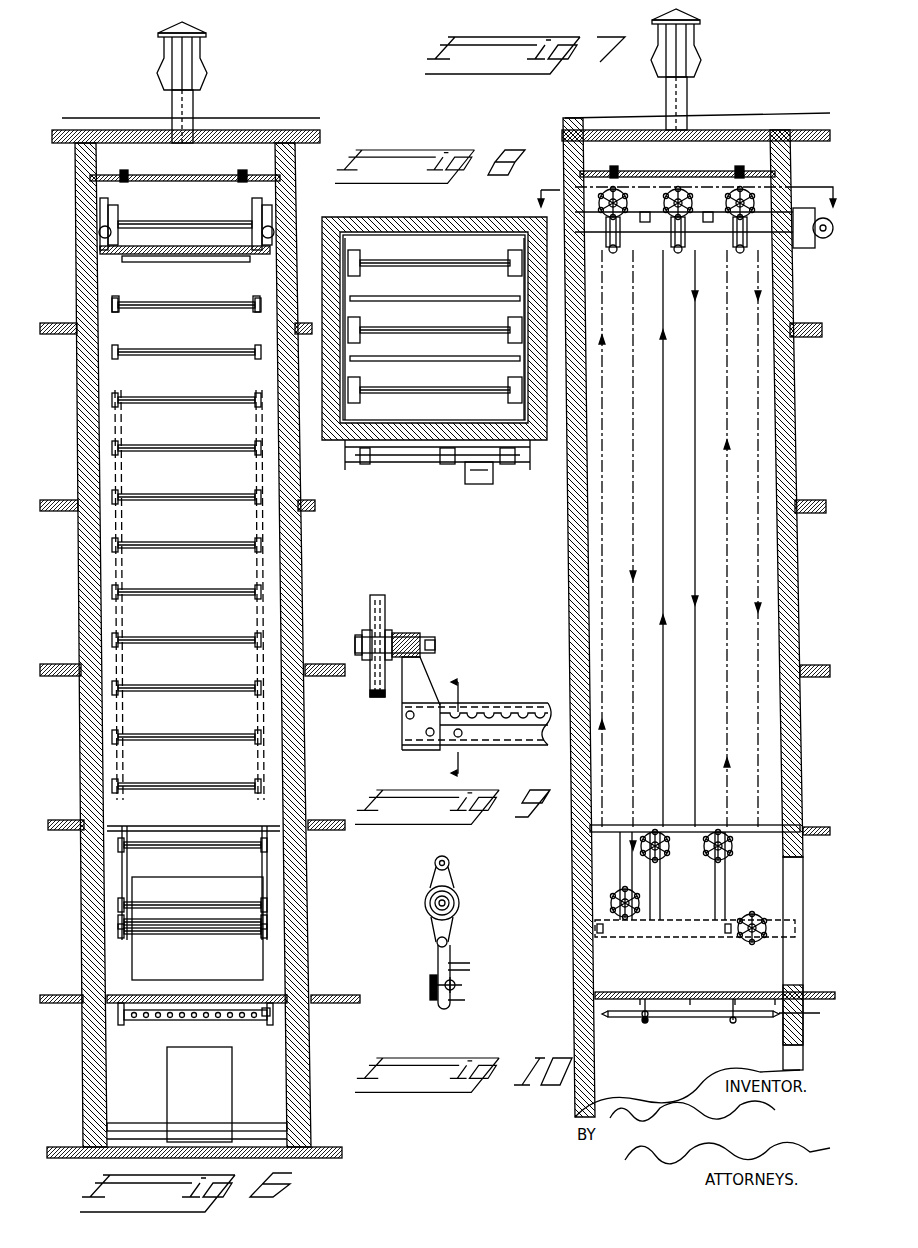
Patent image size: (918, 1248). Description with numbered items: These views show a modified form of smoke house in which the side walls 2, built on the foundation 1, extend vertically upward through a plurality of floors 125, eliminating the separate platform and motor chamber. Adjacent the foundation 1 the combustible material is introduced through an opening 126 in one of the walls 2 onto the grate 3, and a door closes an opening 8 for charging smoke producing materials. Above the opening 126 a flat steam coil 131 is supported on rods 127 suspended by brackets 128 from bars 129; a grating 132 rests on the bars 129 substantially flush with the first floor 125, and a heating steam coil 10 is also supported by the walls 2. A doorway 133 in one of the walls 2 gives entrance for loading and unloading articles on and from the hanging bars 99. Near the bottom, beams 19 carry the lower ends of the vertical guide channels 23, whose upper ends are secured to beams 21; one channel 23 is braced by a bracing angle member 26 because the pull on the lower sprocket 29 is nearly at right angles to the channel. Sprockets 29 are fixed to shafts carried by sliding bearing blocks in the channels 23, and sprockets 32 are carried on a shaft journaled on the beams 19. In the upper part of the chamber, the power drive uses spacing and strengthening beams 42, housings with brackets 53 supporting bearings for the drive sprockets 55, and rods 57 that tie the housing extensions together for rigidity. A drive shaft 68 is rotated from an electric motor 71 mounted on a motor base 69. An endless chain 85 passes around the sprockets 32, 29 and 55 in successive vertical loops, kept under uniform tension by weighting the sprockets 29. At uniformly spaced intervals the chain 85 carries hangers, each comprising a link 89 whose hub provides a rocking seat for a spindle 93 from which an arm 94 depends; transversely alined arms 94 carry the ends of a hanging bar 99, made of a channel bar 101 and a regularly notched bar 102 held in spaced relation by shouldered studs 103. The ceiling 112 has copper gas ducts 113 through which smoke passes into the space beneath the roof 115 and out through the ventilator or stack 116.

In FIG. 6, the foundation 1 is at (335, 1147).
In FIG. 6, the side walls 2 is at (85, 407).
In FIG. 7, the side walls 2 is at (575, 868).
In FIG. 8, the side walls 2 is at (435, 218).
In FIG. 6, the grates 3 is at (258, 1123).
In FIG. 7, the opening 8 is at (683, 217).
In FIG. 9, the heating steam coil 10 is at (467, 727).
In FIG. 7, the beams 19 is at (630, 928).
In FIG. 7, the beams 21 is at (745, 826).
In FIG. 7, the guide channels 23 is at (625, 873).
In FIG. 7, the bracing angle member 26 is at (633, 827).
In FIG. 7, the sprocket 29 is at (722, 846).
In FIG. 7, the sprocket 32 is at (752, 918).
In FIG. 6, the spacing and strengthening beams 42 is at (146, 222).
In FIG. 8, the spacing and strengthening beams 42 is at (452, 296).
In FIG. 6, the bracket 53 is at (252, 232).
In FIG. 6, the sprocket 55 is at (141, 235).
In FIG. 8, the sprocket 55 is at (362, 380).
In FIG. 6, the rod 57 is at (168, 254).
In FIG. 8, the rod 57 is at (398, 266).
In FIG. 8, the drive shaft 68 is at (410, 462).
In FIG. 8, the motor base 69 is at (490, 472).
In FIG. 8, the electric motor 71 is at (465, 473).
In FIG. 6, the endless chain 85 is at (258, 556).
In FIG. 7, the endless chain 85 is at (762, 478).
In FIG. 6, the link 89 is at (200, 306).
In FIG. 9, the link 89 is at (384, 607).
In FIG. 10, the link 89 is at (447, 878).
In FIG. 9, the spindle 93 is at (412, 642).
In FIG. 9, the arm 94 is at (413, 688).
In FIG. 10, the arm 94 is at (444, 940).
In FIG. 6, the hanging bar 99 is at (205, 262).
In FIG. 9, the hanging bar 99 is at (526, 713).
In FIG. 10, the hanging bar 99 is at (463, 975).
In FIG. 9, the channel bar 101 is at (495, 710).
In FIG. 10, the channel bar 101 is at (467, 963).
In FIG. 9, the notched bar 102 is at (540, 738).
In FIG. 10, the notched bar 102 is at (440, 1000).
In FIG. 9, the shouldered studs 103 is at (456, 737).
In FIG. 10, the shouldered studs 103 is at (458, 988).
In FIG. 6, the ceiling 112 is at (215, 168).
In FIG. 7, the ceiling 112 is at (705, 168).
In FIG. 6, the gas ducts 113 is at (238, 181).
In FIG. 7, the gas ducts 113 is at (650, 166).
In FIG. 6, the roof 115 is at (268, 130).
In FIG. 7, the roof 115 is at (762, 129).
In FIG. 6, the ventilator or stack 116 is at (190, 112).
In FIG. 7, the ventilator or stack 116 is at (684, 112).
In FIG. 6, the floors 125 is at (62, 336).
In FIG. 7, the floors 125 is at (815, 500).
In FIG. 6, the opening 126 is at (207, 1078).
In FIG. 7, the opening 126 is at (800, 1050).
In FIG. 6, the rods 127 is at (258, 1018).
In FIG. 7, the rods 127 is at (645, 1023).
In FIG. 6, the brackets 128 is at (118, 1010).
In FIG. 7, the brackets 128 is at (677, 981).
In FIG. 7, the bars 129 is at (733, 1005).
In FIG. 6, the flat steam coil 131 is at (155, 1020).
In FIG. 7, the flat steam coil 131 is at (715, 1018).
In FIG. 6, the grating 132 is at (263, 997).
In FIG. 7, the grating 132 is at (760, 992).
In FIG. 6, the doorway 133 is at (243, 963).
In FIG. 7, the doorway 133 is at (792, 892).